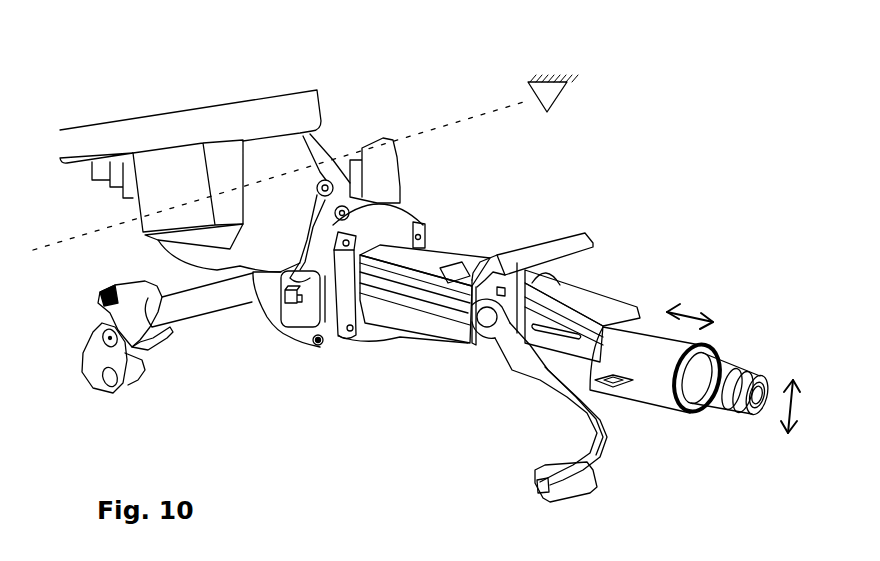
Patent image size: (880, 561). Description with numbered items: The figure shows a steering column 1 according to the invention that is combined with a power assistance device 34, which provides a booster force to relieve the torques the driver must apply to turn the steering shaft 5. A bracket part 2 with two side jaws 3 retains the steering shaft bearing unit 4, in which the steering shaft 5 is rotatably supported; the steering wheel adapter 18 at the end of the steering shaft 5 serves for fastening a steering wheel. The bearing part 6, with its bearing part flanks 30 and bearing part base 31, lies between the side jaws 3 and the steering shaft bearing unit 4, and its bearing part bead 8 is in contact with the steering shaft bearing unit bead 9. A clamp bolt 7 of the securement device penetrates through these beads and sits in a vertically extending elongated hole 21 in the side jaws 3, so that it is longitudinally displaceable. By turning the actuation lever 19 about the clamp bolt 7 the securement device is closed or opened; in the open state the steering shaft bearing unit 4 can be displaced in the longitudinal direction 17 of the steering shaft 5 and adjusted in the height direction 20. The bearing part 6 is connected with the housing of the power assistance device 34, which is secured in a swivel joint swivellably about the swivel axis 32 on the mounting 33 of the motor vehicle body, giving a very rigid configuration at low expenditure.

The steering column 1 is at (576, 351).
The bracket part 2 is at (575, 243).
The side jaws 3 is at (475, 320).
The steering shaft bearing unit 4 is at (585, 305).
The steering shaft 5 is at (715, 410).
The bearing part 6 is at (408, 312).
The clamp bolt 7 is at (481, 330).
The bearing part bead 8 is at (437, 300).
The steering shaft bearing unit bead 9 is at (630, 392).
The longitudinal direction 17 is at (693, 312).
The steering wheel adapter 18 is at (745, 378).
The actuation lever 19 is at (560, 467).
The height direction 20 is at (800, 427).
The elongated hole 21 is at (503, 280).
The bearing part flank 30 is at (447, 315).
The bearing part base 31 is at (390, 253).
The swivel axis 32 is at (485, 113).
The mounting 33 is at (548, 92).
The power assistance device 34 is at (288, 328).